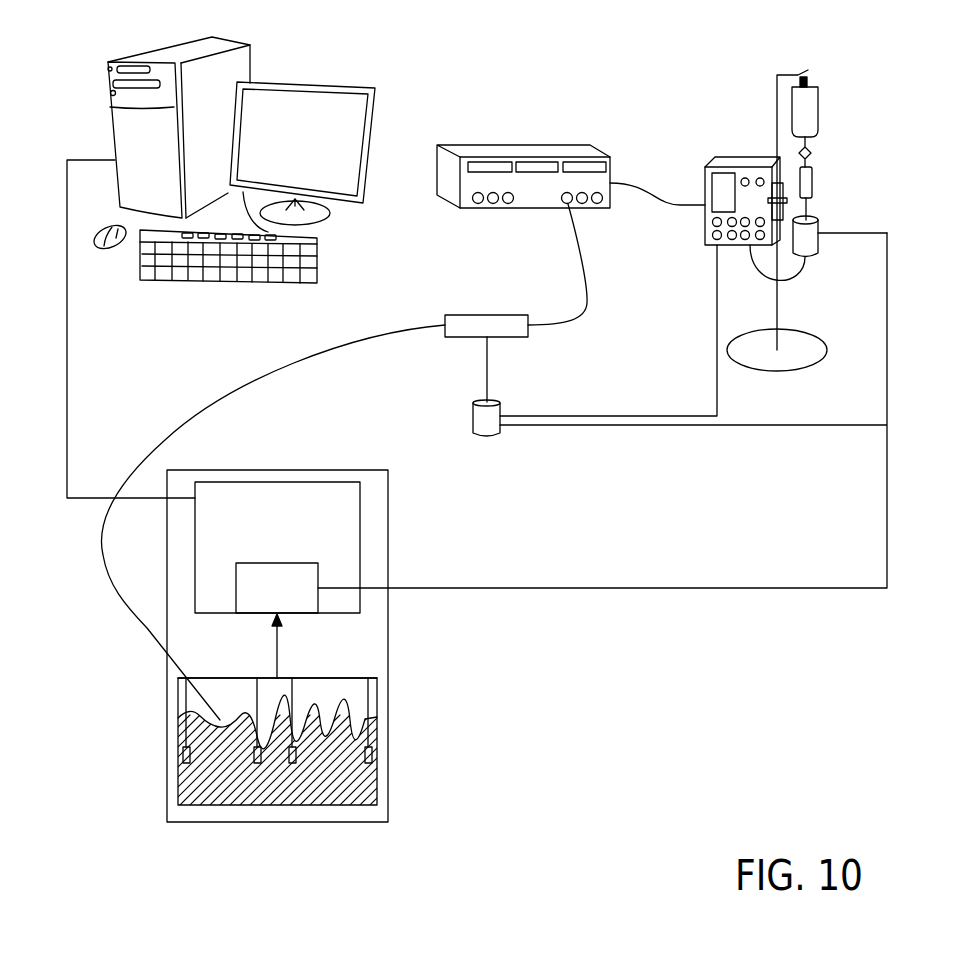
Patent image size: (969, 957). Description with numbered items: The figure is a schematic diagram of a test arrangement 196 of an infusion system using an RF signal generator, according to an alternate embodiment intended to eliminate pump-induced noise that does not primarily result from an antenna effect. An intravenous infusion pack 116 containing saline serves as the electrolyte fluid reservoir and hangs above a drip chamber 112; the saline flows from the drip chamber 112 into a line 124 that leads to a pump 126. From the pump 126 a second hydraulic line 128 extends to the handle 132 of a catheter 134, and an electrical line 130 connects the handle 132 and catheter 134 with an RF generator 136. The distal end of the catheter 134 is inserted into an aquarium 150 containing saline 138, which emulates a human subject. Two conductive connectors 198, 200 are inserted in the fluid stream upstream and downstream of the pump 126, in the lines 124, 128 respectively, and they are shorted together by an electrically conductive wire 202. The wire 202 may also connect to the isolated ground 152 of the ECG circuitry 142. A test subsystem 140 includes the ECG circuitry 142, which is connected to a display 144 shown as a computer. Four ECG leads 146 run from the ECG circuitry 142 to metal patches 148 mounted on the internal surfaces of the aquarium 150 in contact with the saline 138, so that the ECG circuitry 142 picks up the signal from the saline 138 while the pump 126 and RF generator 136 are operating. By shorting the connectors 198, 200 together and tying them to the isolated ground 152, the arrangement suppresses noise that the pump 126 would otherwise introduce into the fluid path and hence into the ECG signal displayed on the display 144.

The test arrangement 196 is at (433, 63).
The display 144 is at (305, 83).
The RF generator 136 is at (467, 144).
The electrical line 130 is at (570, 244).
The handle 132 is at (478, 314).
The catheter 134 is at (380, 341).
The pump 126 is at (725, 157).
The intravenous infusion pack 116 is at (820, 106).
The drip chamber 112 is at (812, 180).
The conductive connector 198 is at (818, 258).
The line 124 is at (770, 274).
The line 128 is at (633, 416).
The conductive connector 200 is at (472, 424).
The electrically conductive wire 202 is at (887, 412).
The test subsystem 140 is at (390, 503).
The ECG circuitry 142 is at (323, 482).
The isolated ground 152 is at (294, 616).
The aquarium 150 is at (323, 806).
The ECG leads 146 is at (243, 646).
The saline 138 is at (226, 790).
The metal patches 148 is at (187, 764).